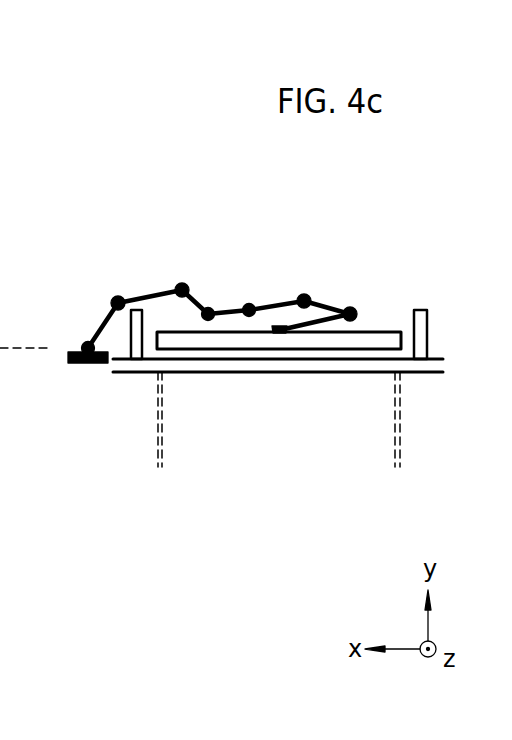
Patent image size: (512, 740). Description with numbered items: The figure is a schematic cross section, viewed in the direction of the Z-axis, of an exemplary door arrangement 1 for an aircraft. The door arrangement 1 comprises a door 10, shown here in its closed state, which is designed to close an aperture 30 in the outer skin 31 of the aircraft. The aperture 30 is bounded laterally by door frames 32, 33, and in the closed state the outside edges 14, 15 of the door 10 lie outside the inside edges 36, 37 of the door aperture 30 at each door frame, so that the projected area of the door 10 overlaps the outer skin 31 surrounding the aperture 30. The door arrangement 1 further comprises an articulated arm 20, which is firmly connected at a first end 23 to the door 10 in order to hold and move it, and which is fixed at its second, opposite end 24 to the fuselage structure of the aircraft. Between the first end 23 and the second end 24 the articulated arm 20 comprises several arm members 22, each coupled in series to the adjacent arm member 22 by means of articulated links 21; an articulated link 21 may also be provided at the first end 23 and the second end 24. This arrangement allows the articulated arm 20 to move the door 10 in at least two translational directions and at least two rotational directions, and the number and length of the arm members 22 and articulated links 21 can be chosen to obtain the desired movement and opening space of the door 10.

The door arrangement 1 is at (163, 97).
The door 10 is at (384, 340).
The outside edge of the door 14 is at (160, 462).
The outside edge of the door 15 is at (397, 462).
The articulated arm 20 is at (189, 292).
The articulated link 21 is at (247, 304).
The arm member 22 is at (110, 333).
The first end of the articulated arm 23 is at (281, 335).
The second end of the articulated arm 24 is at (83, 344).
The aperture 30 is at (332, 366).
The outer skin 31 is at (428, 373).
The door frame 32 is at (424, 310).
The door frame 33 is at (136, 362).
The inside edge of the door aperture 36 is at (160, 462).
The inside edge of the door aperture 37 is at (397, 462).